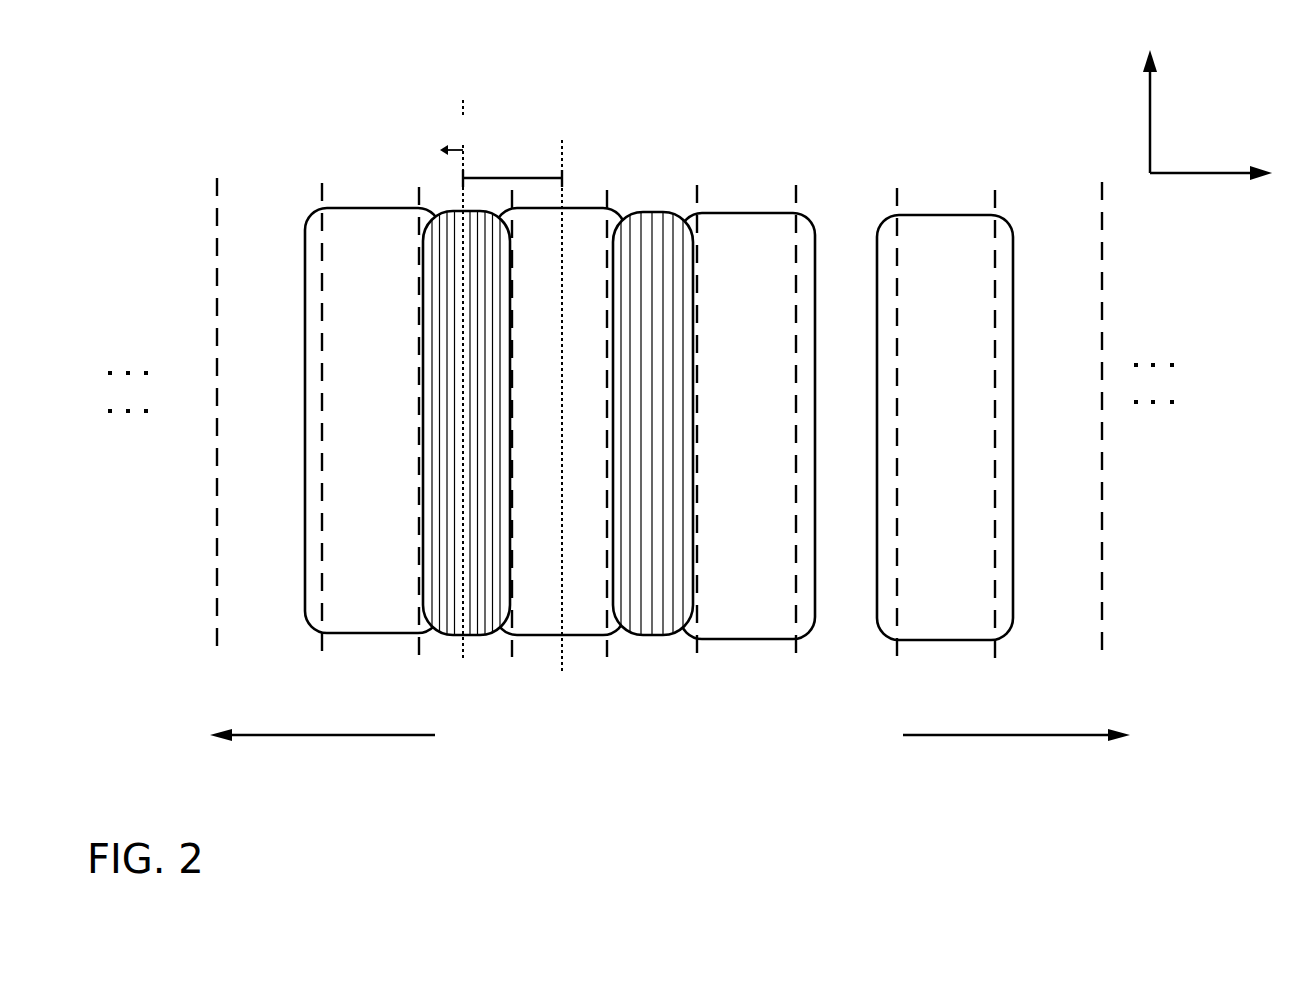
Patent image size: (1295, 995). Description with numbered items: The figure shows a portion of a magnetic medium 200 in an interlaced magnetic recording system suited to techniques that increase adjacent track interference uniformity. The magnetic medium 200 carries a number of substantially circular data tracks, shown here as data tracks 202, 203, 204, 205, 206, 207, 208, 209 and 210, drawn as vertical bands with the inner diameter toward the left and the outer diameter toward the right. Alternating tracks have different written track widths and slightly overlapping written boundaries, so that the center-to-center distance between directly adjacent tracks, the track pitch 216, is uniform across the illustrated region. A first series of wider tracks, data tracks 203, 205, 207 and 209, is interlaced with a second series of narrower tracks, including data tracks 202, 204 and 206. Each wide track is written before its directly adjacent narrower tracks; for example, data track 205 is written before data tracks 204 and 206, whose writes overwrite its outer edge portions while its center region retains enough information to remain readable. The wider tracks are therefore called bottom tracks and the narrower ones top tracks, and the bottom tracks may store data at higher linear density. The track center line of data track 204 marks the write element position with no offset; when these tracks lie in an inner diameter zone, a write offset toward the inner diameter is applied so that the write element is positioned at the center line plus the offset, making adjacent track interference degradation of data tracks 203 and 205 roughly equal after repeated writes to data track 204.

The magnetic medium 200 is at (205, 111).
The data track 202 is at (256, 269).
The data track 203 is at (353, 269).
The data track 204 is at (450, 269).
The data track 205 is at (543, 269).
The data track 206 is at (636, 269).
The data track 207 is at (736, 269).
The data track 208 is at (831, 269).
The data track 209 is at (932, 269).
The data track 210 is at (1031, 269).
The track pitch 216 is at (501, 397).